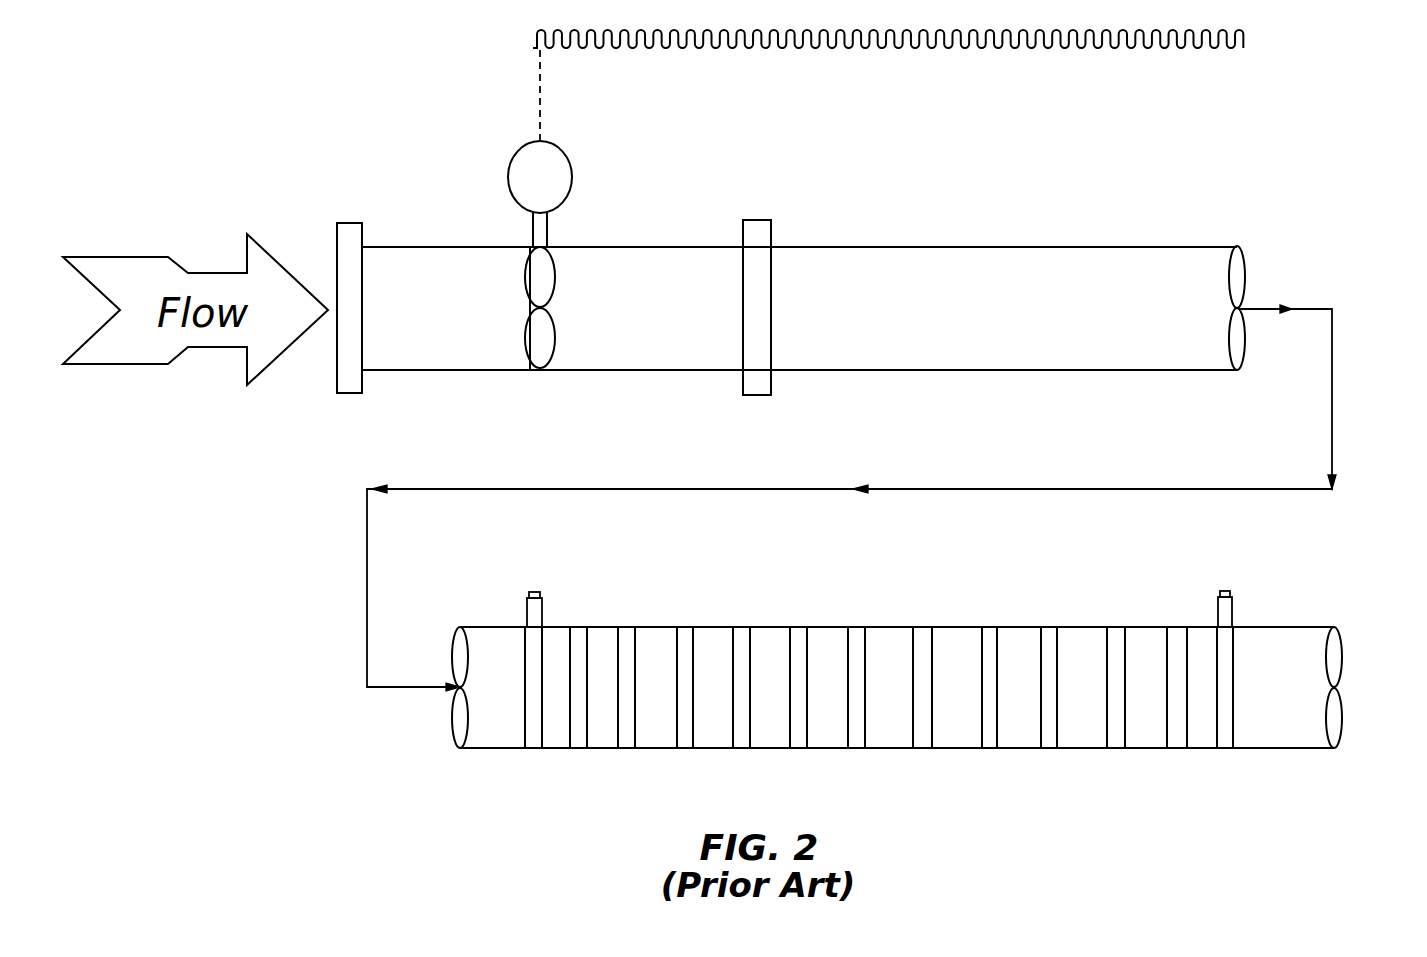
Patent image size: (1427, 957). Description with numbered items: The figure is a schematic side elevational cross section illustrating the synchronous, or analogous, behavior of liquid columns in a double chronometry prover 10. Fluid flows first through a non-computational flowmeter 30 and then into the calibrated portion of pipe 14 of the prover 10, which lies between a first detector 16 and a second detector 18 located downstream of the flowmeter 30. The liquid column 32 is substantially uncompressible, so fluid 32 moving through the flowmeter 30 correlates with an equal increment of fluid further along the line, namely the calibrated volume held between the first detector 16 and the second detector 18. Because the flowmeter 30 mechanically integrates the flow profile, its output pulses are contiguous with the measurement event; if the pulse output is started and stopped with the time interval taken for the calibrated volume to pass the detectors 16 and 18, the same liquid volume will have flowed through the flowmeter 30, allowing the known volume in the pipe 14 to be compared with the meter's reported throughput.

The double chronometry prover 10 is at (899, 704).
The calibrated portion of pipe 14 is at (890, 627).
The first detector 16 is at (527, 612).
The second detector 18 is at (1235, 612).
The non-computational flowmeter 30 is at (582, 220).
The liquid column 32 is at (1332, 398).